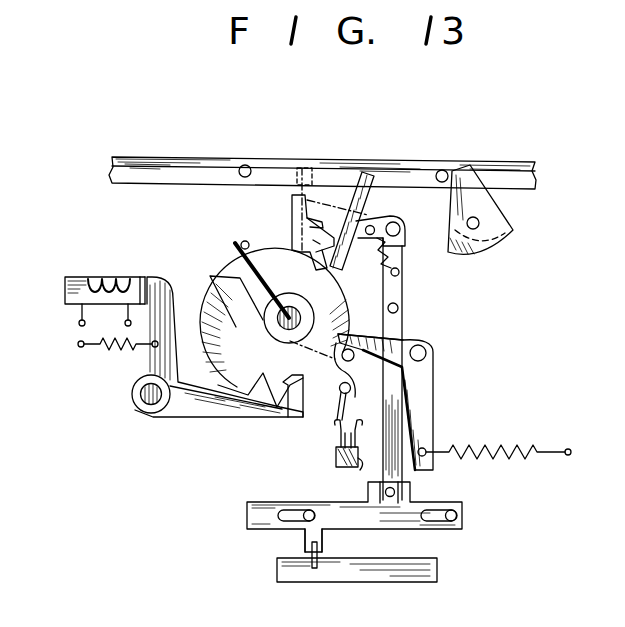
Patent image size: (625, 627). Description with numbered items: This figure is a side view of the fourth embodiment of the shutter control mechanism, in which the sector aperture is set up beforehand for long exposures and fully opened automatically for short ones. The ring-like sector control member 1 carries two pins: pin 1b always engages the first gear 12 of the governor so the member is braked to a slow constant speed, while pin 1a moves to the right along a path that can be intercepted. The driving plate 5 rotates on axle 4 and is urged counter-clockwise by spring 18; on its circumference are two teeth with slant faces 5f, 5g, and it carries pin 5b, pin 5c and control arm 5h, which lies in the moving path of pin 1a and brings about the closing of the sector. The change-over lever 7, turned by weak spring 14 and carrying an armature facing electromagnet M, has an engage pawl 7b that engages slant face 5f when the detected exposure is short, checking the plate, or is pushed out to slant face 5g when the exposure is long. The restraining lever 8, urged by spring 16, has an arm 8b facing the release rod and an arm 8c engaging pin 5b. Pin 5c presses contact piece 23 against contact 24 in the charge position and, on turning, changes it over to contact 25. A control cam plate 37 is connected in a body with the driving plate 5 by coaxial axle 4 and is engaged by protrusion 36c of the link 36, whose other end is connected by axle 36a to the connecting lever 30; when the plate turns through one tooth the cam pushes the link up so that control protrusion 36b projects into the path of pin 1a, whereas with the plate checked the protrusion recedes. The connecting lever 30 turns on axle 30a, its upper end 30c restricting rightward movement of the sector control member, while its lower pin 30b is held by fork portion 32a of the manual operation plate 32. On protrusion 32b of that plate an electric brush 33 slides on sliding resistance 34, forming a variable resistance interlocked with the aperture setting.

The sector control member 1 is at (155, 175).
The pin 1a is at (240, 165).
The pin 1b is at (442, 170).
The axle 4 is at (207, 290).
The driving plate 5 is at (212, 357).
The pin 5b is at (433, 370).
The pin 5c is at (352, 393).
The slant face of first tooth 5f is at (258, 392).
The slant face of second tooth 5g is at (230, 383).
The control arm 5h is at (368, 177).
The change-over lever 7 is at (150, 415).
The engage pawl 7b is at (297, 408).
The restraining lever 8 is at (422, 380).
The arm of restraining lever 8b is at (423, 426).
The arm of restraining lever 8c is at (398, 308).
The first gear of governor 12 is at (490, 232).
The spring 14 is at (100, 350).
The spring 16 is at (515, 455).
The spring 18 is at (240, 246).
The contact piece 23 is at (333, 417).
The contact 24 is at (333, 460).
The contact 25 is at (353, 470).
The connecting lever 30 is at (430, 344).
The axle 30a is at (404, 312).
The pin 30b is at (390, 498).
The upper end of connecting lever 30c is at (400, 250).
The manual operation plate 32 is at (250, 516).
The fork portion 32a is at (402, 492).
The protrusion 32b is at (303, 542).
The electric brush 33 is at (322, 570).
The sliding resistance 34 is at (392, 578).
The link 36 is at (300, 222).
The axle 36a is at (402, 207).
The control protrusion 36b is at (292, 200).
The protrusion 36c is at (297, 257).
The control cam plate 37 is at (322, 225).
The electromagnet M is at (95, 277).